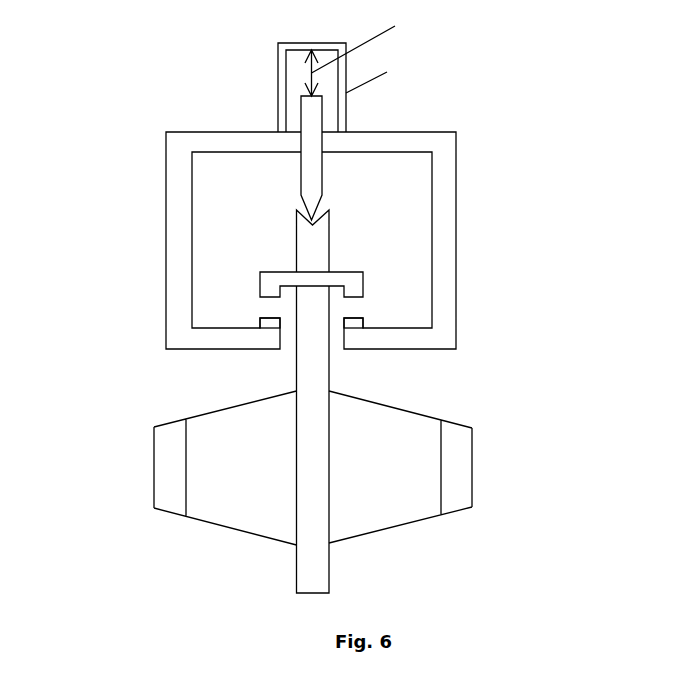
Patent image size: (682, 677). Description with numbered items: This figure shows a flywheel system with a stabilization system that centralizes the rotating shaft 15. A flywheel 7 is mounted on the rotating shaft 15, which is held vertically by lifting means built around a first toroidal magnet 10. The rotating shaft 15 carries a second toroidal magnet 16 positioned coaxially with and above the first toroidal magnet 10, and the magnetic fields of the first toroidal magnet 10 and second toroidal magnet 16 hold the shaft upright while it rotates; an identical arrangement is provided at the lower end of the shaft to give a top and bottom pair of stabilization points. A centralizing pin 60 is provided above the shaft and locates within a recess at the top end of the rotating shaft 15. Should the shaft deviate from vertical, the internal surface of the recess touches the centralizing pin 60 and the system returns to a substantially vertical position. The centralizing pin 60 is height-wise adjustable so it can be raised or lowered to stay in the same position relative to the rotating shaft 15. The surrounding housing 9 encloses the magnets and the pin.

The housing 9 is at (311, 218).
The centralizing pin 60 is at (320, 167).
The second toroidal magnet 16 is at (260, 297).
The first toroidal magnet 10 is at (260, 318).
The rotating shaft 15 is at (329, 503).
The flywheel 7 is at (155, 467).